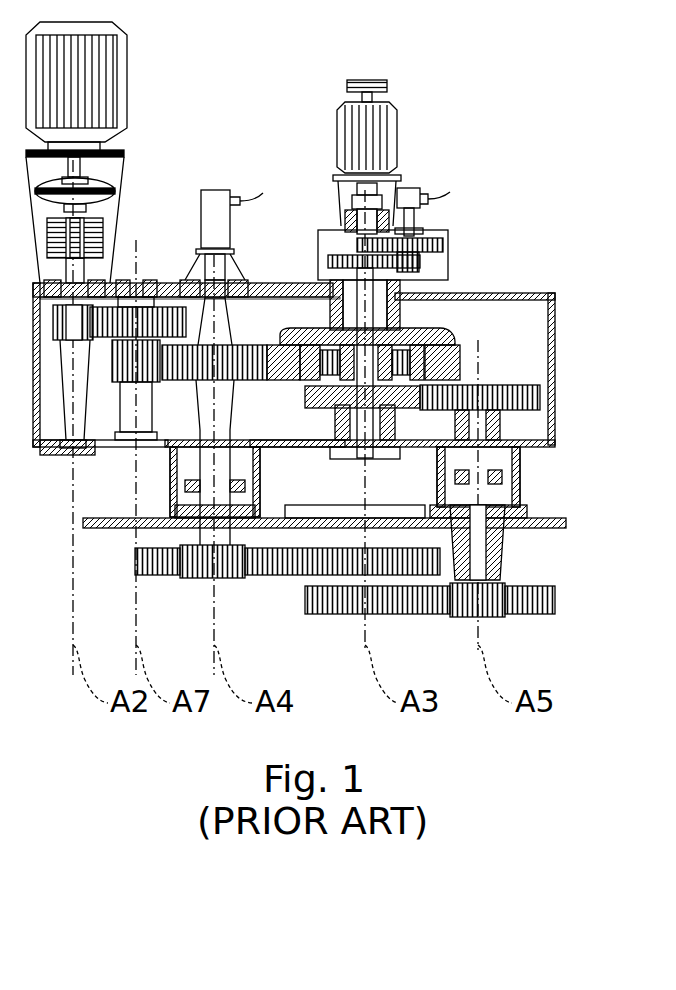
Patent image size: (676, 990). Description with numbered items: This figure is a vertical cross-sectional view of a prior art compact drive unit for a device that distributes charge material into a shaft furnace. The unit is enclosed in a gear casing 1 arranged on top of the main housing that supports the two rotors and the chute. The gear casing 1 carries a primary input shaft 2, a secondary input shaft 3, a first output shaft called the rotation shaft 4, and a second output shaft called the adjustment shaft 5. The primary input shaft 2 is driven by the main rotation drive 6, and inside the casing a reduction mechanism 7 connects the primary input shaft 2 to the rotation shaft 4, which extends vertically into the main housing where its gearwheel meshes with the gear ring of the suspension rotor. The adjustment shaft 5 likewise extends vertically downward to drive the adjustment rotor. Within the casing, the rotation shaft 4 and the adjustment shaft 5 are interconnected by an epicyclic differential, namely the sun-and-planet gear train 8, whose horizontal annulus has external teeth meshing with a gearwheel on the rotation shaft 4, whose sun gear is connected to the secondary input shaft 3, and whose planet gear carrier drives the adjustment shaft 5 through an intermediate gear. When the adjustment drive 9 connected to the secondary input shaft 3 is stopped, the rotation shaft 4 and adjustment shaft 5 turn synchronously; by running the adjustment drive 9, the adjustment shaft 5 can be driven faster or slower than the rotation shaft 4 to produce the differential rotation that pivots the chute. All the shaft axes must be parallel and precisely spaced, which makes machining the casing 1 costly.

The gear casing 1 is at (530, 512).
The primary input shaft 2 is at (76, 288).
The secondary input shaft 3 is at (358, 278).
The rotation shaft 4 is at (180, 540).
The adjustment shaft 5 is at (484, 538).
The main rotation drive 6 is at (108, 76).
The reduction mechanism 7 is at (112, 402).
The sun-and-planet gear train 8 is at (460, 325).
The adjustment drive 9 is at (385, 128).